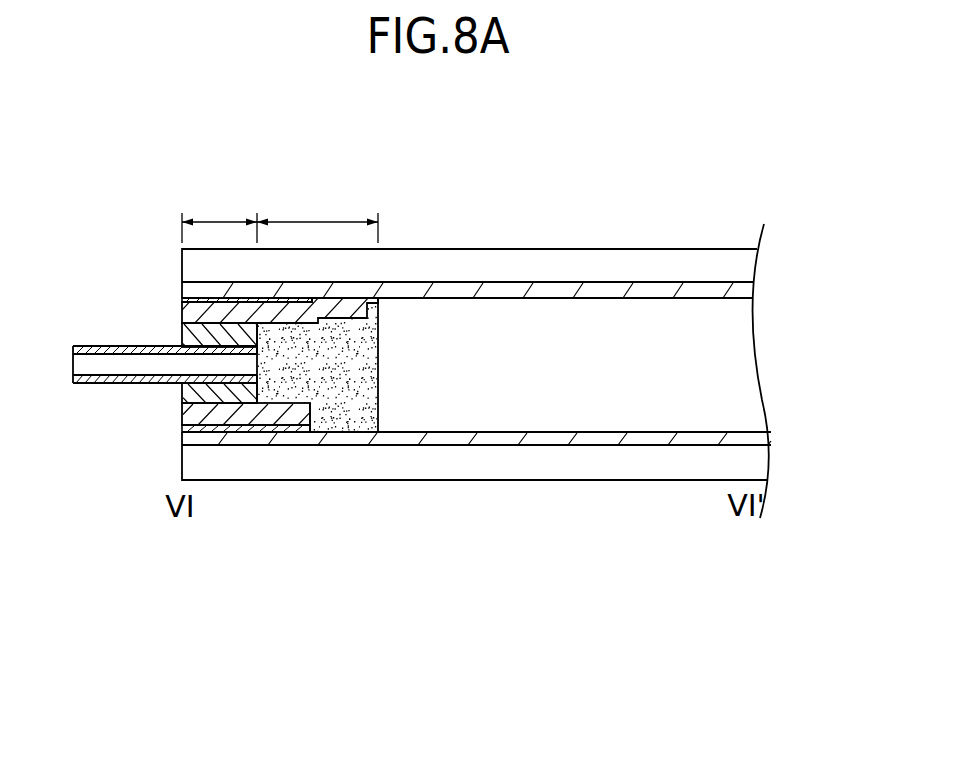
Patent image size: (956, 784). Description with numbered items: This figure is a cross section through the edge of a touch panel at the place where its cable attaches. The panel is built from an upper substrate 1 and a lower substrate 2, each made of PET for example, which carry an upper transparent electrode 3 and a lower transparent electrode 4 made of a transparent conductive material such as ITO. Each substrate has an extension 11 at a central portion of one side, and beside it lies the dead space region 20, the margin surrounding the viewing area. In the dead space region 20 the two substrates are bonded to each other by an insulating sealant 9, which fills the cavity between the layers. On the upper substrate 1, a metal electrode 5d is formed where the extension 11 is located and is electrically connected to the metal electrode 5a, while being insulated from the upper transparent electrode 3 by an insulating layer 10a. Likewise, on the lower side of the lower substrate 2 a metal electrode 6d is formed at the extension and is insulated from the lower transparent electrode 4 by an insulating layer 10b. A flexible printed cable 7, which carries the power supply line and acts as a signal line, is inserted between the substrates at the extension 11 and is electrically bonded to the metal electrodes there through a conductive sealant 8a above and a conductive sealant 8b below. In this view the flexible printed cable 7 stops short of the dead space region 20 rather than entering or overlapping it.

The upper substrate 1 is at (747, 273).
The lower substrate 2 is at (765, 462).
The upper transparent electrode 3 is at (747, 296).
The lower transparent electrode 4 is at (765, 441).
The metal electrode 5a is at (367, 307).
The metal electrode 5d is at (182, 309).
The metal electrode 6d is at (182, 420).
The flexible printed cable 7 is at (58, 347).
The conductive sealant 8a is at (182, 333).
The conductive sealant 8b is at (182, 393).
The insulating sealant 9 is at (345, 397).
The insulating layer 10a is at (182, 300).
The insulating layer 10b is at (182, 428).
The extension 11 is at (219, 212).
The dead space region 20 is at (317, 210).